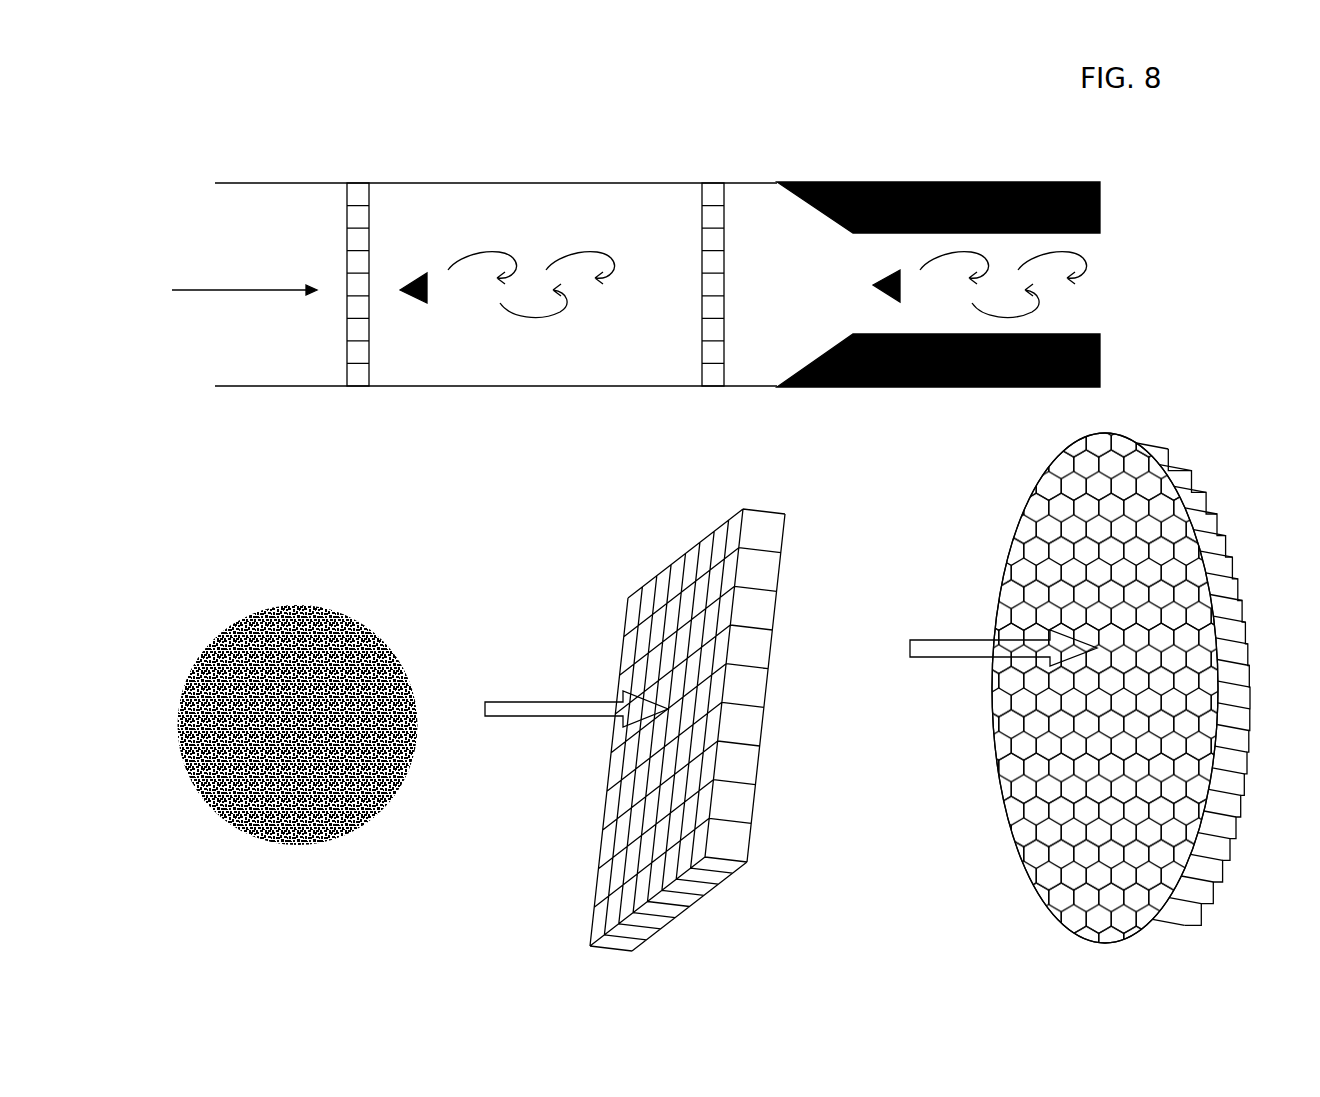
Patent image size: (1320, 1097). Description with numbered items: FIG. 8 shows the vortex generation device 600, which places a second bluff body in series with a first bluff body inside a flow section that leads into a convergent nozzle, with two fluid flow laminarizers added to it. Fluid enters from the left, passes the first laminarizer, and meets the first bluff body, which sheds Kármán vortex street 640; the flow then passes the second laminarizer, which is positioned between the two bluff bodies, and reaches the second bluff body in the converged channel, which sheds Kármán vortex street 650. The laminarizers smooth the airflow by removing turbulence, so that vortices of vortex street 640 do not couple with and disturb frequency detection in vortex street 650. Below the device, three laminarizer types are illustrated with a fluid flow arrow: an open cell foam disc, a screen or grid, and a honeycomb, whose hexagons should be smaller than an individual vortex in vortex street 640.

The device 600 is at (787, 128).
The Kármán vortex street 640 is at (525, 253).
The Kármán vortex street 650 is at (1083, 293).